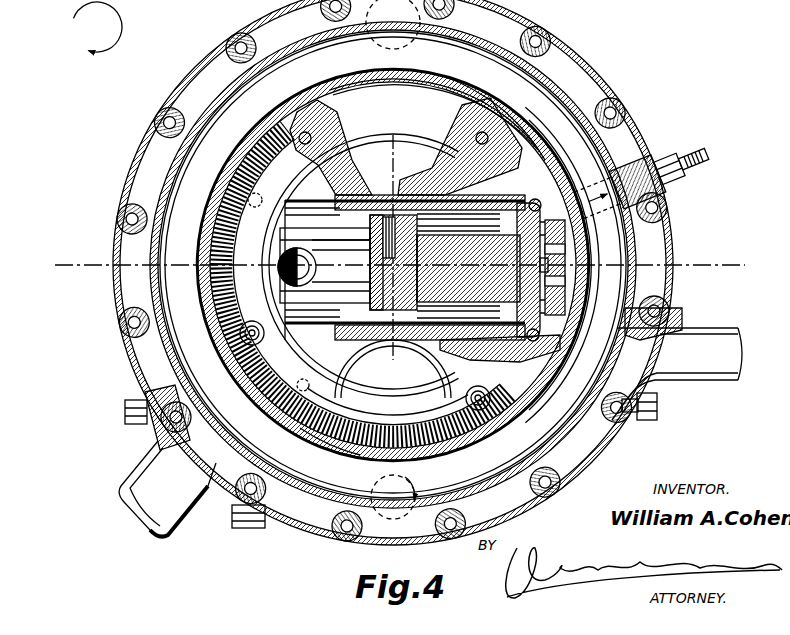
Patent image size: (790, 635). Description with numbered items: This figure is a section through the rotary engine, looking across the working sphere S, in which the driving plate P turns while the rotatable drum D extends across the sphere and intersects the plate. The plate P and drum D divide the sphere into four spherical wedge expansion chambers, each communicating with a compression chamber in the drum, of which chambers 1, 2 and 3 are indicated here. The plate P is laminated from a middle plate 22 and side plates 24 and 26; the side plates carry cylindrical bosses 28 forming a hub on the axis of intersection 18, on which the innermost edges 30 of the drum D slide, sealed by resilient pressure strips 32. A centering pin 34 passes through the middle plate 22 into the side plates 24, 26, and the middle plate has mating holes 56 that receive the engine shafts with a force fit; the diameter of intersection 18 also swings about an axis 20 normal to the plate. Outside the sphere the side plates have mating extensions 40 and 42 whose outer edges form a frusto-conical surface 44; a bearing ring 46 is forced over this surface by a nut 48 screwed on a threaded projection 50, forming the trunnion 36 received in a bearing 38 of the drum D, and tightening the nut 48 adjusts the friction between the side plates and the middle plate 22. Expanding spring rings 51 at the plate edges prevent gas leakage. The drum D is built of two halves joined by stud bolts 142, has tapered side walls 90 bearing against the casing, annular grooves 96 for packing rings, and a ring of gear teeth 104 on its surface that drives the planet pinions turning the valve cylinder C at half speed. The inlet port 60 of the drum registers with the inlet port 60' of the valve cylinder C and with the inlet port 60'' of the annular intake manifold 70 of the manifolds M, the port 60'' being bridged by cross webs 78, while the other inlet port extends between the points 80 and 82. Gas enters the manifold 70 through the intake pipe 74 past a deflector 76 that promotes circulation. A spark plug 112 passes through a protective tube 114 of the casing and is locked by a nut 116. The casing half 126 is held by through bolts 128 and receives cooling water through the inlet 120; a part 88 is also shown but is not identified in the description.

The compression chamber 3 is at (52, 268).
The manifolds M is at (553, 113).
The casing half 126 is at (213, 56).
The through bolts 128 is at (168, 103).
The cooling water inlet 120 is at (350, 538).
The end point of inlet port 82 is at (600, 446).
The intake manifold 70 is at (572, 137).
The end point of inlet port 80 is at (224, 167).
The bearings 38 is at (550, 160).
The trunnions 36 is at (560, 182).
The valve cylinder C is at (278, 112).
The cross webs 78 is at (335, 80).
The inlet ports 60 is at (432, 94).
The inlet ports of valve cylinder 60' is at (375, 104).
The inlet ports of manifold 60'' is at (492, 117).
The ring of gear teeth 104 is at (232, 217).
The annular grooves 96 is at (395, 404).
The tapered side walls 90 is at (332, 448).
The stud bolts 142 is at (262, 193).
The resilient pressure strips 32 is at (438, 168).
The drum D is at (345, 155).
The axis 20 is at (388, 155).
The compression chamber 1 is at (395, 234).
The compression chamber 2 is at (393, 372).
The driving plate P is at (330, 300).
The side plate 24 is at (495, 200).
The side plate 26 is at (520, 340).
The innermost edges of drum 30 is at (450, 195).
The cylindrical bosses 28 is at (480, 195).
The diameter of intersection 18 is at (240, 266).
The mating holes 56 is at (292, 268).
The expanding spring rings 51 is at (328, 300).
The middle plate 22 is at (376, 250).
The centering pin 34 is at (403, 276).
The extension 40 is at (540, 252).
The extension 42 is at (540, 290).
The nut 48 is at (560, 250).
The frusto-conical surface 44 is at (548, 235).
The threaded projection 50 is at (560, 262).
The bearing ring 46 is at (547, 307).
The working sphere S is at (340, 385).
The protective tube 114 is at (670, 213).
The nut 116 is at (677, 188).
The spark plugs 112 is at (690, 170).
The intake pipe 74 is at (711, 355).
The deflector 76 is at (653, 398).
The inlet pipe 88 is at (153, 490).